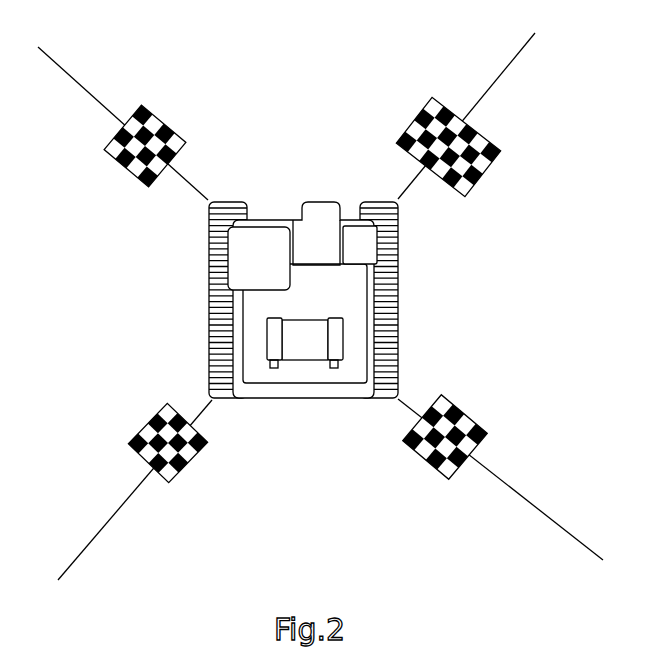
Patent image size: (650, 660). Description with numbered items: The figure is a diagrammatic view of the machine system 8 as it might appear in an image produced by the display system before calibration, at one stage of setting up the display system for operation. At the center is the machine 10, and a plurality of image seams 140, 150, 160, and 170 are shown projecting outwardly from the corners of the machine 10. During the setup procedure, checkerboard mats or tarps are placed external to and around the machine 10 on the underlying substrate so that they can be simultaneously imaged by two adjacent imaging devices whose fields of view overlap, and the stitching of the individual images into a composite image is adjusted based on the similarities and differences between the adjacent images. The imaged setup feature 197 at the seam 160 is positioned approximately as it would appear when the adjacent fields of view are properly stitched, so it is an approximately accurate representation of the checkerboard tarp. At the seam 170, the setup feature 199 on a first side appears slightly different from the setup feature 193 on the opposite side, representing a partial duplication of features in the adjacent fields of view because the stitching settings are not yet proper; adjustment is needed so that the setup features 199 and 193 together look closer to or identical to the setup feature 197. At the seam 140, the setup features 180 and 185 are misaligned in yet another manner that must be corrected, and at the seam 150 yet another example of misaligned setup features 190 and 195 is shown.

The machine system 8 is at (558, 196).
The machine 10 is at (416, 302).
The image seam 140 is at (591, 549).
The image seam 150 is at (88, 546).
The image seam 160 is at (58, 67).
The image seam 170 is at (502, 72).
The setup feature 180 is at (432, 448).
The setup feature 185 is at (423, 470).
The setup feature 190 is at (178, 448).
The setup feature 193 is at (491, 143).
The setup feature 195 is at (184, 469).
The imaged setup feature 197 is at (156, 112).
The setup feature 199 is at (465, 125).